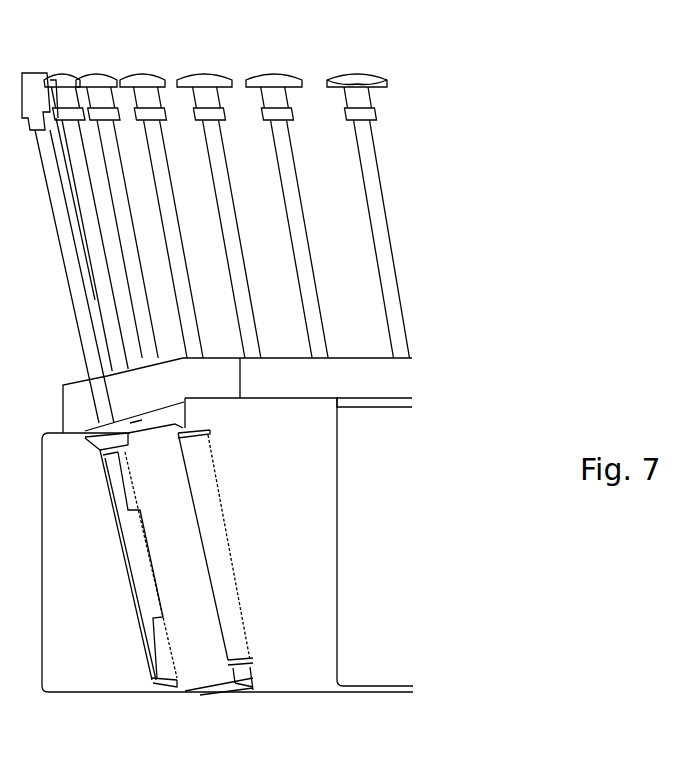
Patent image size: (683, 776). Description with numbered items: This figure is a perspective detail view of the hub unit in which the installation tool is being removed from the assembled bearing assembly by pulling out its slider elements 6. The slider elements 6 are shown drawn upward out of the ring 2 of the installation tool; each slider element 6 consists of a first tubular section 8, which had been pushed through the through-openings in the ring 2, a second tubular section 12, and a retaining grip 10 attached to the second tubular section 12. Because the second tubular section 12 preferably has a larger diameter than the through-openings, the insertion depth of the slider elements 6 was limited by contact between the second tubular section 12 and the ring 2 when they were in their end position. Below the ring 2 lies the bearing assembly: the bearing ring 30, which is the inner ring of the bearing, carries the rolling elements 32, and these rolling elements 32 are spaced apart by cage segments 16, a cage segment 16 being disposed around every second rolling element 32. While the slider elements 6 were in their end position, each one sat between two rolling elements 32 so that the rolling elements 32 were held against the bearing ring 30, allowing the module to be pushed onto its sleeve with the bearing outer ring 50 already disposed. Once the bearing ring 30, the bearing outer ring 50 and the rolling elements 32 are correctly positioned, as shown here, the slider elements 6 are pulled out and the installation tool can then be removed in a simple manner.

The slider element 6 is at (390, 191).
The retaining grip 10 is at (361, 80).
The second tubular section 12 is at (366, 101).
The first tubular section 8 is at (390, 264).
The ring 2 is at (390, 373).
The rolling element 32 is at (236, 631).
The cage segment 16 is at (193, 675).
The bearing ring 30 is at (298, 675).
The bearing outer ring 50 is at (102, 676).